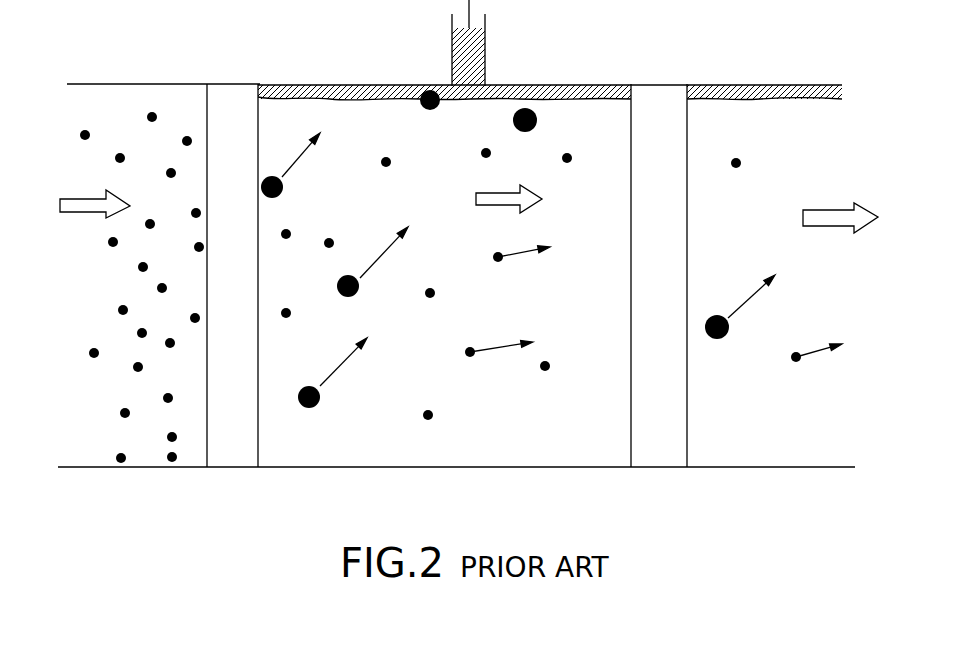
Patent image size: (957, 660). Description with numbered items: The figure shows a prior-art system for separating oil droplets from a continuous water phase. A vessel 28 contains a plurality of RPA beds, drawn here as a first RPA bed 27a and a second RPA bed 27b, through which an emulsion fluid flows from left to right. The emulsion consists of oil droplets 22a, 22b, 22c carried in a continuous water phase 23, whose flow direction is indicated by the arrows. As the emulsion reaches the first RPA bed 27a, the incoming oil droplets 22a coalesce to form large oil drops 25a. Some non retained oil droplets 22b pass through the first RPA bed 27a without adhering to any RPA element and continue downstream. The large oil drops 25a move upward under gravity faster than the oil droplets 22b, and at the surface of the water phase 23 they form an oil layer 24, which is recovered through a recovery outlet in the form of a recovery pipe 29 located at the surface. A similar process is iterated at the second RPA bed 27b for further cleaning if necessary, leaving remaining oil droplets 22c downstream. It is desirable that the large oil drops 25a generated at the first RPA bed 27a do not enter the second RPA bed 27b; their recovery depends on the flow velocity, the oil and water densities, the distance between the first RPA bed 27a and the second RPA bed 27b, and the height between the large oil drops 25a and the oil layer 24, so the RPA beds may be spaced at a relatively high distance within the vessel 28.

The oil droplets 22a is at (121, 155).
The non retained oil droplets 22b is at (472, 355).
The oil droplets 22c is at (795, 362).
The continuous water phase 23 is at (100, 300).
The oil layer 24 is at (369, 103).
The large oil drops 25a is at (359, 290).
The first RPA bed 27a is at (259, 123).
The second RPA bed 27b is at (688, 122).
The vessel 28 is at (457, 468).
The recovery pipe 29 is at (486, 50).